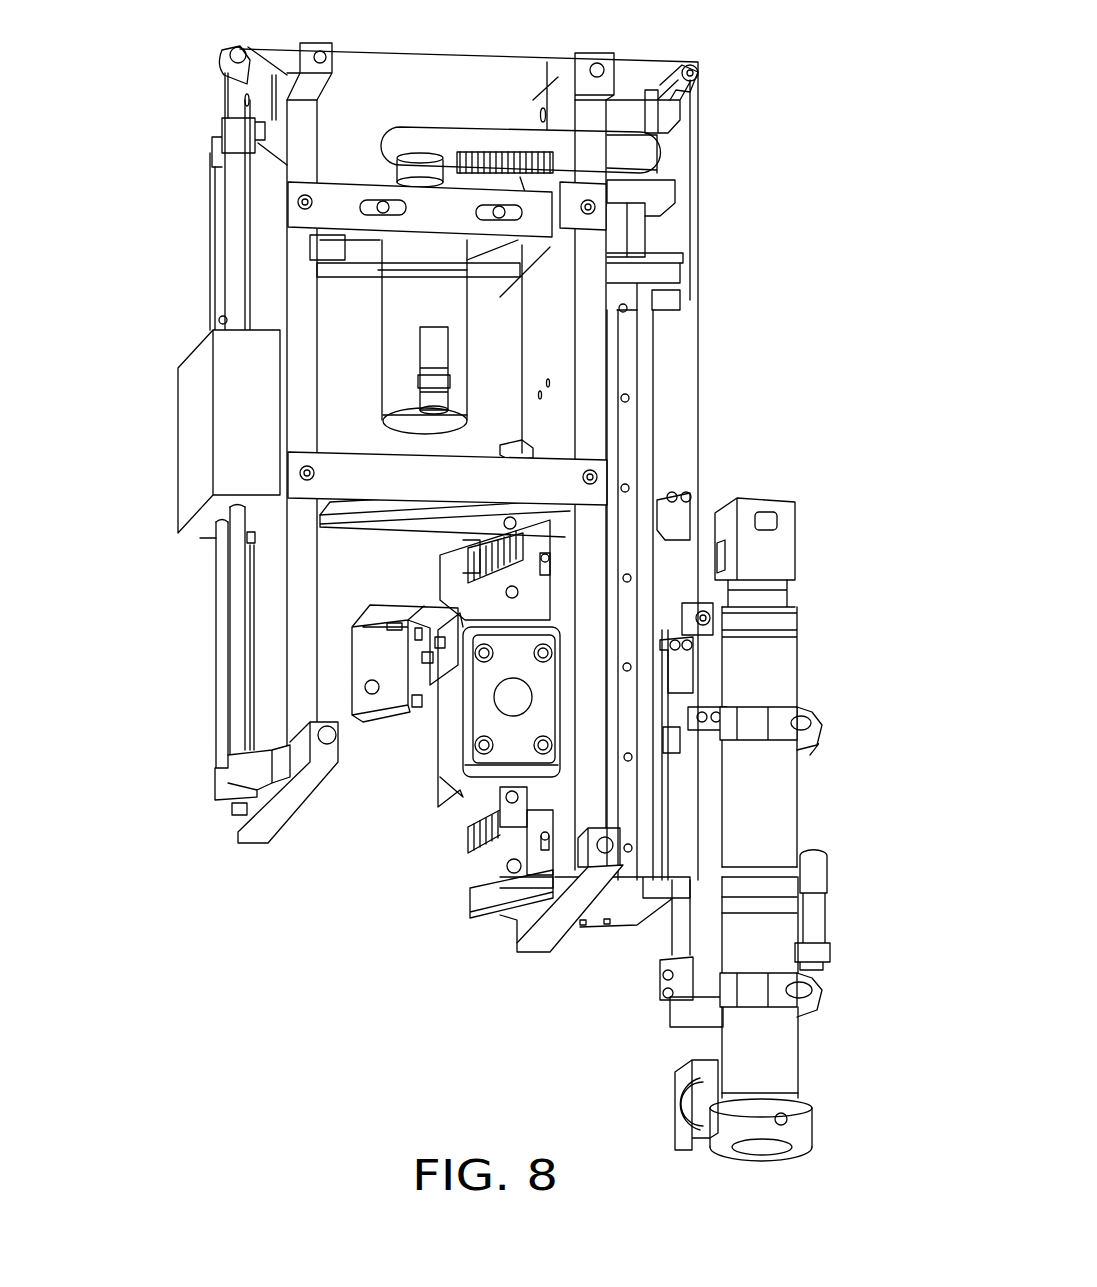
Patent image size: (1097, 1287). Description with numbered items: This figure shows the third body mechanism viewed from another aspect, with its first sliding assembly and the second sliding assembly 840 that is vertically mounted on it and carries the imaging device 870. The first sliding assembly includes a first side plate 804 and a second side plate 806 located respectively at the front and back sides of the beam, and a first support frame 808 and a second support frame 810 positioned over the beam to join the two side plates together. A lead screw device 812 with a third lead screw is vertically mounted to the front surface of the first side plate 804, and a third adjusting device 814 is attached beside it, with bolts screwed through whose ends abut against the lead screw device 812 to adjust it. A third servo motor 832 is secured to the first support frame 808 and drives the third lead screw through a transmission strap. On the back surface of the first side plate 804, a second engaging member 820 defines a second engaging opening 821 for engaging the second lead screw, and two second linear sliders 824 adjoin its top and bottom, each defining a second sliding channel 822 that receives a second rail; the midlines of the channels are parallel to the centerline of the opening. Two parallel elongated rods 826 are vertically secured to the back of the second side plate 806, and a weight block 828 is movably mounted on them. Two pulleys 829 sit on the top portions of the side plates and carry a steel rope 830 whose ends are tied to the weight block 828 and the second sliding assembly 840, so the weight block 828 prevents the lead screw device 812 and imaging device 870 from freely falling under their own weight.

The first side plate 804 is at (540, 930).
The second side plate 806 is at (325, 47).
The first support frame 808 is at (340, 190).
The second support frame 810 is at (342, 475).
The lead screw device 812 is at (645, 403).
The third adjusting device 814 is at (625, 337).
The second engaging member 820 is at (468, 793).
The second engaging opening 821 is at (510, 703).
The second sliding channel 822 is at (502, 852).
The second linear slider 824 is at (487, 888).
The elongated rod 826 is at (225, 683).
The weight block 828 is at (200, 413).
The pulley 829 is at (683, 63).
The steel rope 830 is at (455, 55).
The third servo motor 832 is at (453, 310).
The second sliding assembly 840 is at (680, 942).
The imaging device 870 is at (770, 796).